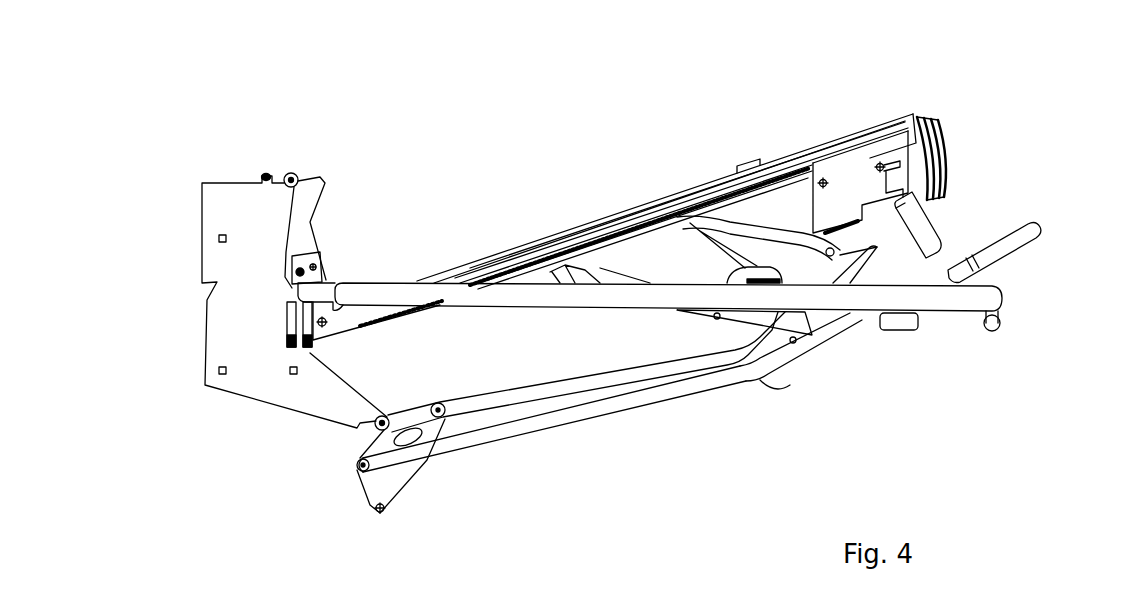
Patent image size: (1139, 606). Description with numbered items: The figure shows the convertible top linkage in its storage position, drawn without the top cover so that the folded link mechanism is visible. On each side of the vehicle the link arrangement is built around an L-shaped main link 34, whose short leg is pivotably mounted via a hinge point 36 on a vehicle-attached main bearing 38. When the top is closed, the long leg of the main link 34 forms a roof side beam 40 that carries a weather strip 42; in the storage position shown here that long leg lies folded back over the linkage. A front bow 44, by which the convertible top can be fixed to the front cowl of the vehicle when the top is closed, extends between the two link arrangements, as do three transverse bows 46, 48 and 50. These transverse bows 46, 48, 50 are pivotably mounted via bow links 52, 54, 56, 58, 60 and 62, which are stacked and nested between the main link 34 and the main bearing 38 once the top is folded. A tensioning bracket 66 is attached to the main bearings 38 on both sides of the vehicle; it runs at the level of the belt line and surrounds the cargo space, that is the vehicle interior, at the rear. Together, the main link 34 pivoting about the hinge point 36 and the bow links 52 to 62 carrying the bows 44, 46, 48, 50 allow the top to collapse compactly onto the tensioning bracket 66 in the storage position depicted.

The main link 34 is at (681, 149).
The hinge point 36 is at (288, 174).
The main bearing 38 is at (222, 202).
The roof side beam 40 is at (785, 175).
The weather strip 42 is at (713, 180).
The front bow 44 is at (857, 180).
The transverse bow 46 is at (918, 213).
The transverse bow 48 is at (862, 260).
The transverse bow 50 is at (957, 262).
The bow link 52 is at (747, 188).
The bow link 54 is at (743, 277).
The bow link 56 is at (598, 278).
The bow link 58 is at (657, 360).
The bow link 60 is at (650, 373).
The bow link 62 is at (757, 387).
The tensioning bracket 66 is at (435, 293).